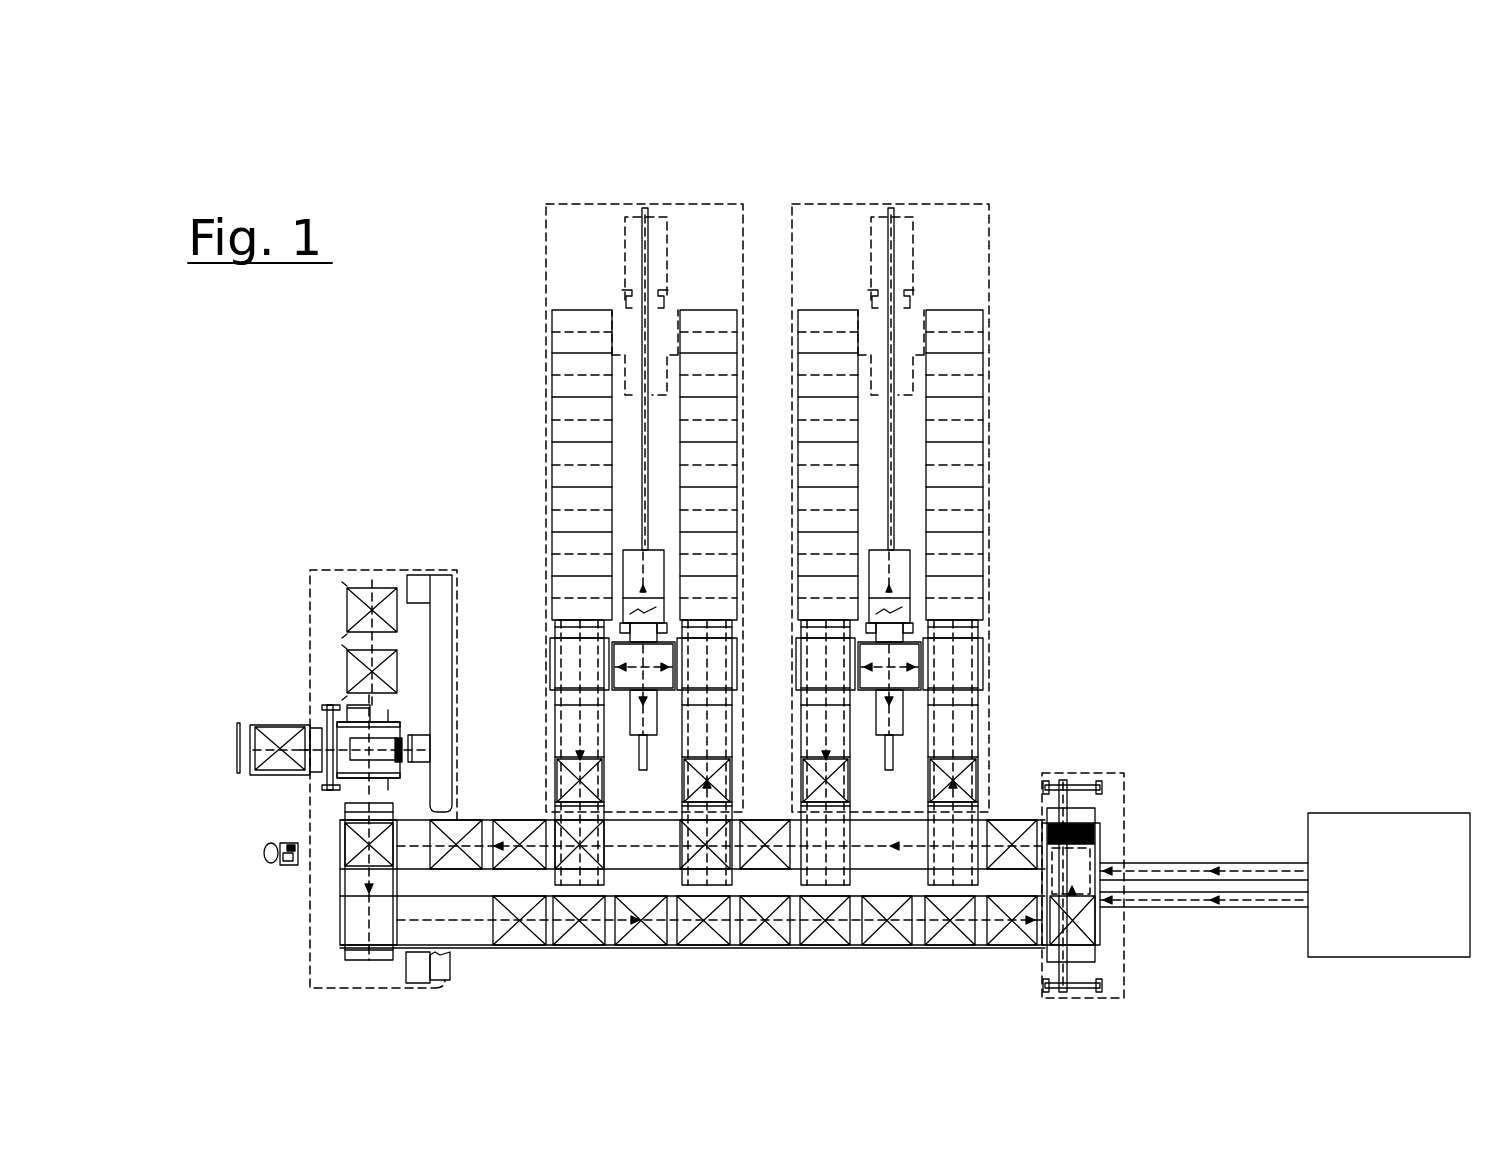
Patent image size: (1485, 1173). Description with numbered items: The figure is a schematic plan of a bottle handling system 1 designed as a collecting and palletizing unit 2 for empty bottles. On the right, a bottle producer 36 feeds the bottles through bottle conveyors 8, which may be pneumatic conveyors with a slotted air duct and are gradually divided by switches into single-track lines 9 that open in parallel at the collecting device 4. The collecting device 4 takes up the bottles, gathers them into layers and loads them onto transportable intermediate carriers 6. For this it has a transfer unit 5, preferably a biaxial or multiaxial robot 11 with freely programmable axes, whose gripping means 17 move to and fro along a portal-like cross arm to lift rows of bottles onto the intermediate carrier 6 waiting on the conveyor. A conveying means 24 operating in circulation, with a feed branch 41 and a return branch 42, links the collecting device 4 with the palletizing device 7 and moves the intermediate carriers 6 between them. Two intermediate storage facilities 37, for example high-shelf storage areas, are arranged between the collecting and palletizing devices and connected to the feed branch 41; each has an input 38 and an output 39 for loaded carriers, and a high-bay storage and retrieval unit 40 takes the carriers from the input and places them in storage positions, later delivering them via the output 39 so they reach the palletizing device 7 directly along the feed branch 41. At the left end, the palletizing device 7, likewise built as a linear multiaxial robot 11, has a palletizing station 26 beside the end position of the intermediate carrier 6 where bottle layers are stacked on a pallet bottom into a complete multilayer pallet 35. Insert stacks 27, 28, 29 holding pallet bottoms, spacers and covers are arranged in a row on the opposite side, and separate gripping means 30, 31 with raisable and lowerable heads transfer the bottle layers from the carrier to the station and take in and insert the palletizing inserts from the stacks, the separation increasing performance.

The bottle handling system 1 is at (340, 669).
The collecting and palletizing unit 2 is at (448, 507).
The collecting device 4 is at (770, 829).
The transfer unit 5 is at (1125, 752).
The intermediate carrier 6 is at (517, 830).
The palletizing device 7 is at (209, 834).
The bottle conveyor 8 is at (1252, 900).
The line 9 is at (1285, 897).
The robot 11 is at (1067, 782).
The gripping means 17 is at (1100, 838).
The conveying means 24 is at (765, 860).
The palletizing station 26 is at (290, 798).
The insert stack 27 is at (308, 600).
The insert stack 28 is at (308, 600).
The insert stack 29 is at (353, 675).
The gripping means 30 is at (417, 729).
The gripping means 31 is at (380, 752).
The pallet 35 is at (283, 738).
The bottle producer 36 is at (1395, 850).
The intermediate storage facility 37 is at (1022, 415).
The input 38 is at (945, 738).
The output 39 is at (813, 727).
The high-bay storage and retrieval unit 40 is at (888, 668).
The feed branch 41 is at (648, 858).
The return branch 42 is at (733, 945).